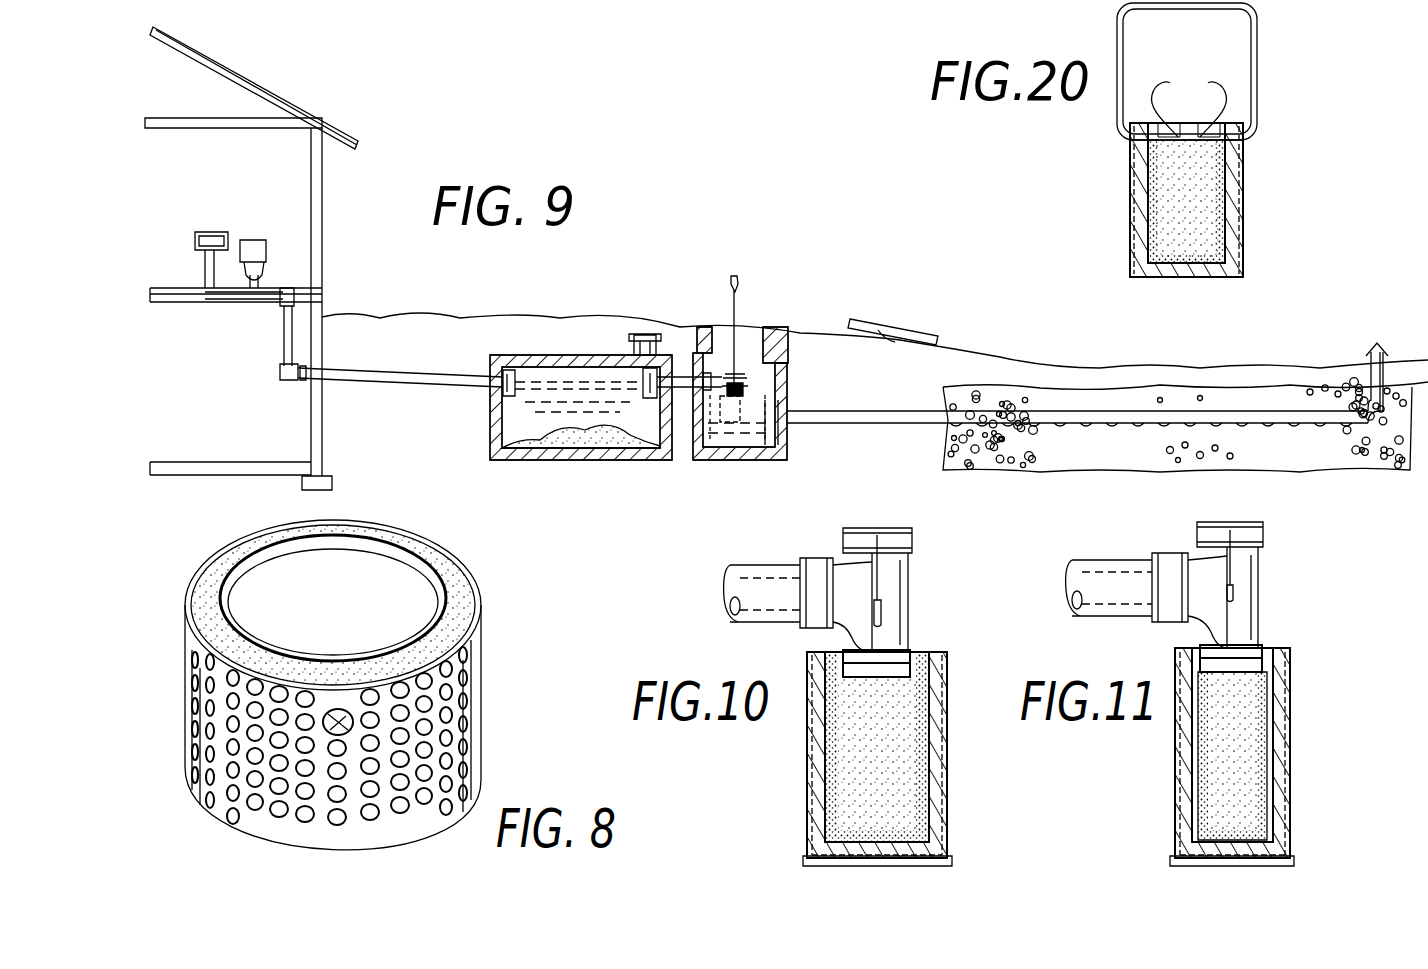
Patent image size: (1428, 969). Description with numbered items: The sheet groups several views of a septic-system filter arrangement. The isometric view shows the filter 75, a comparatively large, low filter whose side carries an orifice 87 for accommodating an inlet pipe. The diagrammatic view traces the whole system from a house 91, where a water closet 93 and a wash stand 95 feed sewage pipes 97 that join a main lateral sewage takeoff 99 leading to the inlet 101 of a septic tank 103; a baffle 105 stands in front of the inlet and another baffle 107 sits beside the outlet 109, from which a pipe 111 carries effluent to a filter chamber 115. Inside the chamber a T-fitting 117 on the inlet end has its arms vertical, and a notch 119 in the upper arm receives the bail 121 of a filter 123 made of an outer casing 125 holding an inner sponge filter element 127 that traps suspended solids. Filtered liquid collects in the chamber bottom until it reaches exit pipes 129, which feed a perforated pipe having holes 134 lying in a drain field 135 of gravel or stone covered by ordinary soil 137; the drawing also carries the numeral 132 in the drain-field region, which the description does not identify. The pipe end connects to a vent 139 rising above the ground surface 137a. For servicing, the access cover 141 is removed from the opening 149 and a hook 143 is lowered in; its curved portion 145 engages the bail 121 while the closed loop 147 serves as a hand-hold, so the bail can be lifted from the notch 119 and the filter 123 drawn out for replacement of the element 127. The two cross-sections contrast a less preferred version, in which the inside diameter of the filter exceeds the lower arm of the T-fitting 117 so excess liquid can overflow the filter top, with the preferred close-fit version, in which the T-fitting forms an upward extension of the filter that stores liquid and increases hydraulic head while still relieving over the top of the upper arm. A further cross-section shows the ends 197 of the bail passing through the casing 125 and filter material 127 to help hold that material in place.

In FIG. 8, the filter 75 is at (482, 638).
In FIG. 8, the orifice 87 is at (340, 708).
In FIG. 9, the house 91 is at (323, 197).
In FIG. 9, the water closet 93 is at (266, 248).
In FIG. 9, the wash stand 95 is at (211, 230).
In FIG. 9, the sewage pipes 97 is at (206, 270).
In FIG. 9, the main lateral sewage takeoff 99 is at (378, 373).
In FIG. 9, the inlet 101 is at (502, 388).
In FIG. 9, the septic tank 103 is at (537, 355).
In FIG. 9, the baffle 105 is at (502, 438).
In FIG. 9, the baffle 107 is at (636, 376).
In FIG. 9, the outlet 109 is at (658, 397).
In FIG. 9, the pipe 111 is at (697, 362).
In FIG. 9, the filter chamber 115 is at (690, 430).
In FIG. 9, the T-fitting 117 is at (787, 375).
In FIG. 10, the T-fitting 117 is at (906, 587).
In FIG. 11, the T-fitting 117 is at (1256, 628).
In FIG. 10, the notch 119 is at (878, 528).
In FIG. 11, the notch 119 is at (1238, 522).
In FIG. 9, the bail 121 is at (744, 408).
In FIG. 10, the bail 121 is at (882, 611).
In FIG. 11, the bail 121 is at (1240, 578).
In FIG. 9, the filter 123 is at (722, 420).
In FIG. 10, the filter 123 is at (956, 762).
In FIG. 11, the filter 123 is at (1296, 699).
In FIG. 20, the filter 123 is at (1245, 173).
In FIG. 10, the outer casing 125 is at (950, 802).
In FIG. 11, the outer casing 125 is at (1292, 737).
In FIG. 20, the outer casing 125 is at (1245, 255).
In FIG. 10, the inner filter element 127 is at (926, 826).
In FIG. 11, the inner filter element 127 is at (1256, 805).
In FIG. 20, the inner filter element 127 is at (1244, 212).
In FIG. 9, the exit pipes 129 is at (842, 424).
In FIG. 9, the gravel fill 132 is at (1062, 424).
In FIG. 9, the holes 134 is at (1300, 440).
In FIG. 9, the drain field 135 is at (1017, 470).
In FIG. 9, the ordinary soil 137 is at (976, 366).
In FIG. 9, the ground surface 137a is at (1092, 362).
In FIG. 9, the vent 139 is at (1370, 350).
In FIG. 9, the access cover 141 is at (892, 333).
In FIG. 9, the hook 143 is at (731, 304).
In FIG. 9, the curved portion 145 is at (744, 378).
In FIG. 9, the closed loop 147 is at (735, 276).
In FIG. 9, the opening 149 is at (780, 330).
In FIG. 20, the ends of the bail 197 is at (1187, 71).